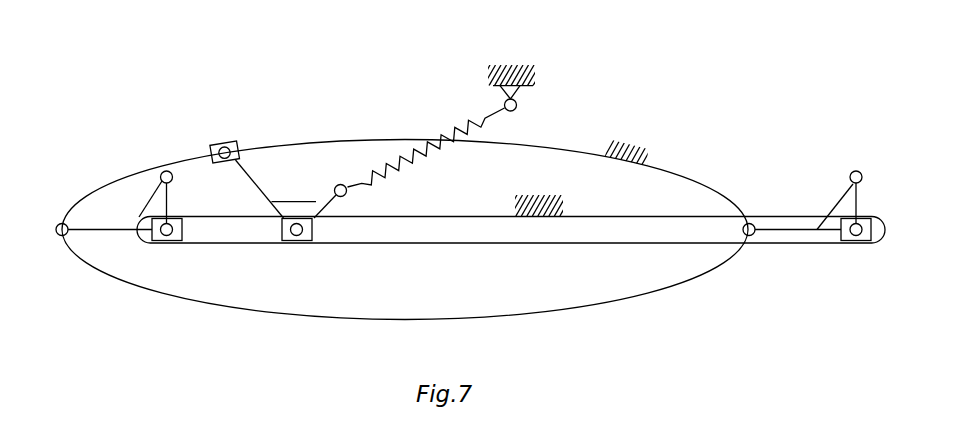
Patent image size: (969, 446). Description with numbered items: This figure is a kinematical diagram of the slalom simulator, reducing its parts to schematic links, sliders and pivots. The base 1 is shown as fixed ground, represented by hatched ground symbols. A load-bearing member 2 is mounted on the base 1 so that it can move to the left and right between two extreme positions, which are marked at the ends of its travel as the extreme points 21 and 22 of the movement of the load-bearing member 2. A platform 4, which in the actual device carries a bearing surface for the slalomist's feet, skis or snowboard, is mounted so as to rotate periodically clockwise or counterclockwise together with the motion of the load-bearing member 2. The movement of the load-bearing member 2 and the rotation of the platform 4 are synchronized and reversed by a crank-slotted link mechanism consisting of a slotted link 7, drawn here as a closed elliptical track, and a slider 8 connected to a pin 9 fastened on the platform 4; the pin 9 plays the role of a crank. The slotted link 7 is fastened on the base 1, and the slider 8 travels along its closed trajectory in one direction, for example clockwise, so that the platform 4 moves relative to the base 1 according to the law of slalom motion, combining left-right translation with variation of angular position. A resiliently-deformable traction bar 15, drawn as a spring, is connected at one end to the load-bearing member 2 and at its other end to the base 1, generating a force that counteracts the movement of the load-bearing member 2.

The base 1 is at (548, 201).
The load-bearing member 2 is at (285, 231).
The platform 4 is at (259, 186).
The slotted link 7 is at (638, 296).
The slider 8 is at (215, 148).
The pin 9 is at (228, 148).
The resiliently-deformable traction bar 15 is at (482, 118).
The extreme point 21 is at (166, 232).
The extreme point 22 is at (856, 233).